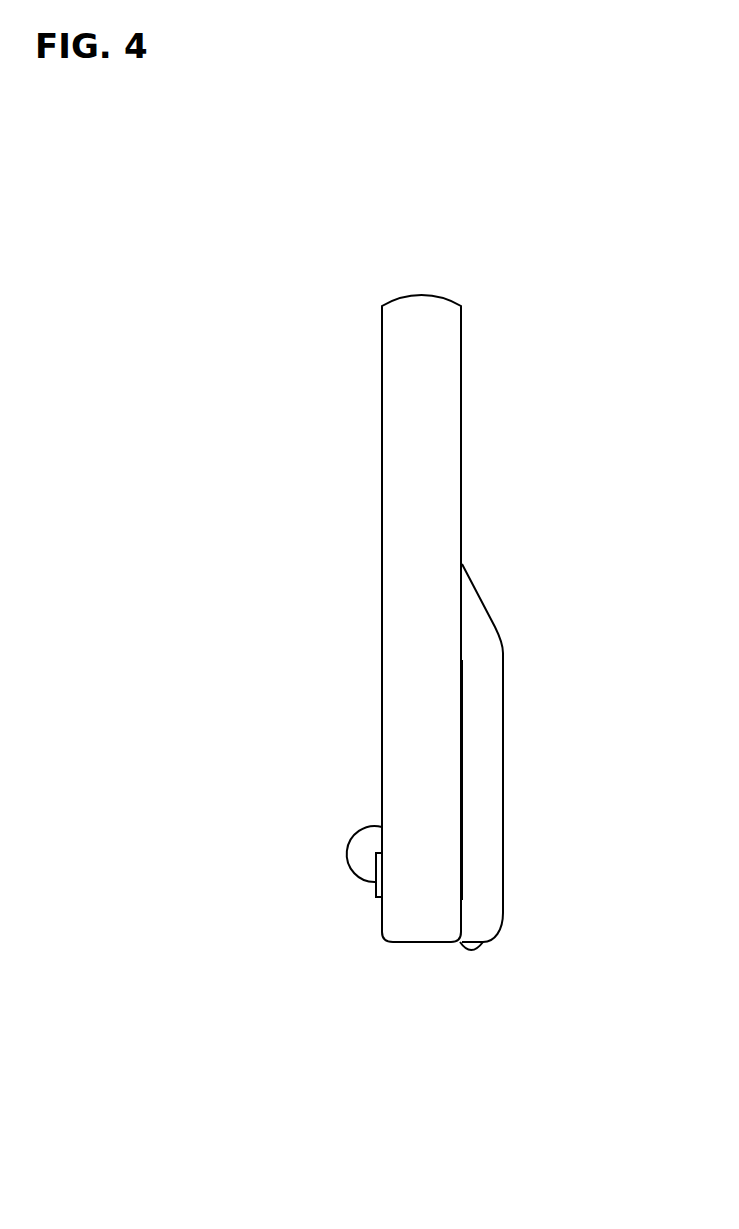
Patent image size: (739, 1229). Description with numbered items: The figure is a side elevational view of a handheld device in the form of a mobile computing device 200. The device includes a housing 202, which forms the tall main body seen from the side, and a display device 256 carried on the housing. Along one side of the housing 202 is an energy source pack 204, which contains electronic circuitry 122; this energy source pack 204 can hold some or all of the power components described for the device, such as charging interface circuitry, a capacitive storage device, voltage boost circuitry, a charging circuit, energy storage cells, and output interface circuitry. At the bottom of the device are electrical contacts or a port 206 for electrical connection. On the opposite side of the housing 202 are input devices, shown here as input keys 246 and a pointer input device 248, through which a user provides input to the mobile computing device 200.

The mobile computing device 200 is at (256, 248).
The housing 202 is at (461, 357).
The energy source pack 204 is at (503, 675).
The electronic circuitry 122 is at (487, 797).
The electrical contacts/port 206 is at (477, 947).
The input keys 246 is at (377, 888).
The pointer input device 248 is at (358, 848).
The display device 256 is at (382, 470).